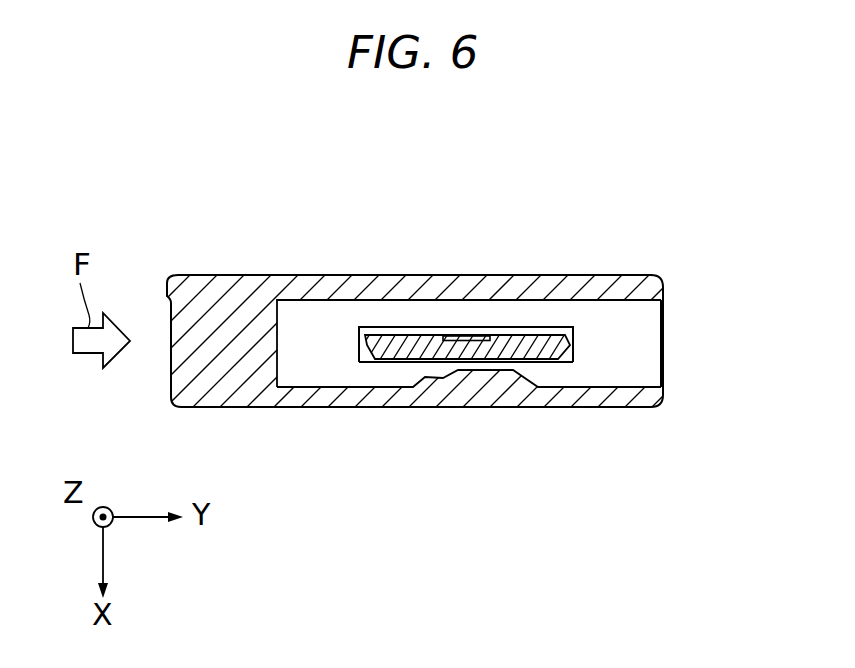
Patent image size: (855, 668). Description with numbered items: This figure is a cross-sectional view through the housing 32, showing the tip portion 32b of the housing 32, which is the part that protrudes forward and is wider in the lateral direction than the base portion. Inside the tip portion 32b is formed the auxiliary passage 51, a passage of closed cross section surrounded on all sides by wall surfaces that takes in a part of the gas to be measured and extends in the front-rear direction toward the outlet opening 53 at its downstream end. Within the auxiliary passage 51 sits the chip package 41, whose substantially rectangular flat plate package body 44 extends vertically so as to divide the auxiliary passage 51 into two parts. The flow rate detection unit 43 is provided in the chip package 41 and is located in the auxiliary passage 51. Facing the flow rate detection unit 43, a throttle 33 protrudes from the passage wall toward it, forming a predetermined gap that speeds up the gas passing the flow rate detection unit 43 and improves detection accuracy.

The housing 32 is at (285, 266).
The tip portion 32b is at (213, 315).
The auxiliary passage 51 is at (392, 315).
The chip package 41 is at (463, 314).
The package body 44 is at (535, 343).
The outlet opening 53 is at (667, 340).
The throttle 33 is at (419, 386).
The flow rate detection unit 43 is at (483, 365).